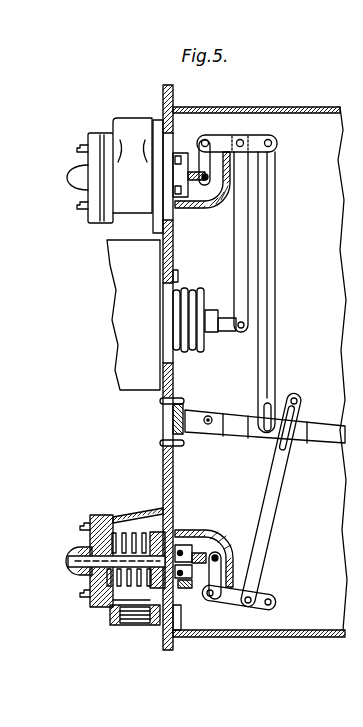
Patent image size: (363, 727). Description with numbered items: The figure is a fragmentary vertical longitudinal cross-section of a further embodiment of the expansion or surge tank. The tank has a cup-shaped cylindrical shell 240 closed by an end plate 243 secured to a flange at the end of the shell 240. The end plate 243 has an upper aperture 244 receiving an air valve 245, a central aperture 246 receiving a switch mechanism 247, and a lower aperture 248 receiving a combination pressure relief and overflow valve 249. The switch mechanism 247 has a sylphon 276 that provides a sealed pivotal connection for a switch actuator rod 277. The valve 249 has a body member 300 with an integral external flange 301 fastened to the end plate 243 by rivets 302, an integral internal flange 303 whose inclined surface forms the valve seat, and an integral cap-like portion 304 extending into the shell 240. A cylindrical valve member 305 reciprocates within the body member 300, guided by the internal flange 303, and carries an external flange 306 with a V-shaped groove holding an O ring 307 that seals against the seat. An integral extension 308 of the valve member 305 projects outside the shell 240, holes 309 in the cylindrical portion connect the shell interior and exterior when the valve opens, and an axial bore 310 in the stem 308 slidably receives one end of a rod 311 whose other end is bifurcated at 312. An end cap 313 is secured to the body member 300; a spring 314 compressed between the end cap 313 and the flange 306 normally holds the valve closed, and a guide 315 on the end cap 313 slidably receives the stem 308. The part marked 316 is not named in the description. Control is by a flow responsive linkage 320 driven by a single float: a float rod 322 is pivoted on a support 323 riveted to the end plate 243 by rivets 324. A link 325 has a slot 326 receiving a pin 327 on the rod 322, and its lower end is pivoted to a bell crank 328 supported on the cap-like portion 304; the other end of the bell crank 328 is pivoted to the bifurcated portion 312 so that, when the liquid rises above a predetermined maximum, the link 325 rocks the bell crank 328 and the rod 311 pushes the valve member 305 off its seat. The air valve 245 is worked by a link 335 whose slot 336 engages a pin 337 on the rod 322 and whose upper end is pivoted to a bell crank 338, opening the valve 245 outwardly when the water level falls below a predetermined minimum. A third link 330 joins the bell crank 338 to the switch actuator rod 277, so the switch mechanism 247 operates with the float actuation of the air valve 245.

The cylindrical shell 240 is at (255, 108).
The end plate 243 is at (164, 463).
The upper aperture 244 is at (172, 137).
The air valve 245 is at (93, 130).
The central aperture 246 is at (179, 280).
The switch mechanism 247 is at (126, 374).
The lower aperture 248 is at (174, 528).
The combination pressure relief and overflow valve 249 is at (92, 513).
The sylphon 276 is at (196, 294).
The switch actuator rod 277 is at (222, 328).
The body member 300 is at (135, 200).
The external flange 301 is at (173, 493).
The rivets 302 is at (158, 508).
The internal flange 303 is at (185, 612).
The cap-like portion 304 is at (194, 212).
The cylindrical valve member 305 is at (202, 152).
The external flange 306 is at (150, 623).
The O ring 307 is at (162, 540).
The extension 308 is at (95, 567).
The holes 309 is at (190, 588).
The axial bore 310 is at (138, 533).
The rod 311 is at (182, 214).
The bifurcated portion 312 is at (217, 204).
The end cap 313 is at (97, 220).
The spring 314 is at (86, 550).
The guide 315 is at (70, 566).
The bottom bracket 316 is at (120, 623).
The flow responsive linkage 320 is at (281, 250).
The rod 322 is at (265, 440).
The support 323 is at (186, 411).
The rivets 324 is at (184, 399).
The link 325 is at (289, 494).
The slot 326 is at (299, 403).
The pin 327 is at (300, 419).
The bell crank 328 is at (278, 600).
The third link 330 is at (248, 262).
The link 335 is at (295, 292).
The slot 336 is at (273, 405).
The pin 337 is at (262, 433).
The bell crank 338 is at (262, 137).